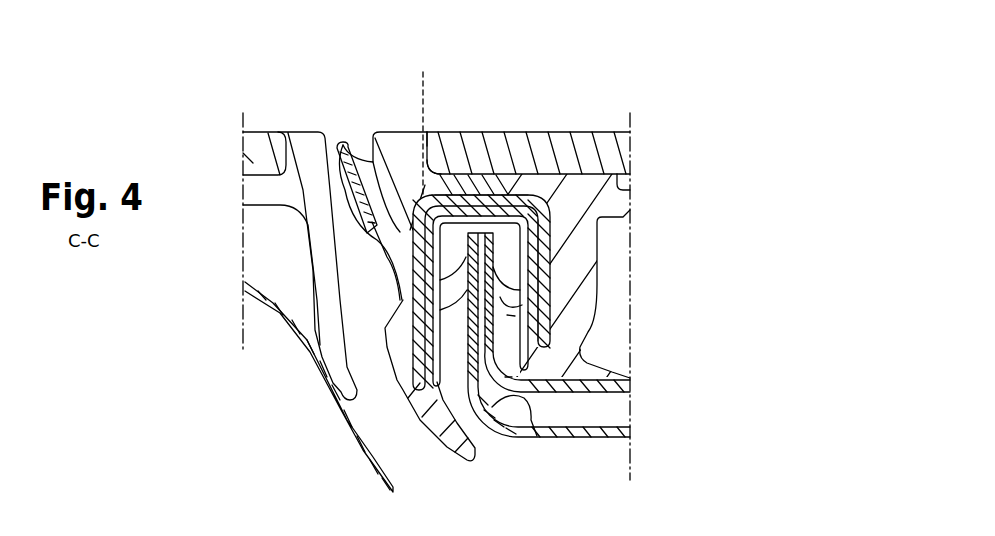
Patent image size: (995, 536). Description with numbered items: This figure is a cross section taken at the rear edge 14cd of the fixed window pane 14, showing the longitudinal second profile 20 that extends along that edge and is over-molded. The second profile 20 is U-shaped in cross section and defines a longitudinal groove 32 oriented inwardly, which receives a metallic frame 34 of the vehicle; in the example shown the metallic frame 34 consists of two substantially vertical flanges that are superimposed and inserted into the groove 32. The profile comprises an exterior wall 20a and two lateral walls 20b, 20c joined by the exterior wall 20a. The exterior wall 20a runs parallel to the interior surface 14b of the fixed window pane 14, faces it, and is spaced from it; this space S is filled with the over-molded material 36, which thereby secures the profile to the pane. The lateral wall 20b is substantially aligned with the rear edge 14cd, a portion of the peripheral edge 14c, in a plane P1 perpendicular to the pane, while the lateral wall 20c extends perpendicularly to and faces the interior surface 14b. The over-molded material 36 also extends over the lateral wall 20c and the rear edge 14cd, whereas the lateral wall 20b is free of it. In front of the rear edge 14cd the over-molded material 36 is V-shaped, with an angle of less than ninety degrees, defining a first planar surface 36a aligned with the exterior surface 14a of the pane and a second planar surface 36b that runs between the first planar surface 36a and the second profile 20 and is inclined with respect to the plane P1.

The fixed window pane 14 is at (551, 115).
The exterior surface 14a is at (488, 132).
The interior surface 14b is at (630, 190).
The peripheral edge 14c is at (382, 166).
The rear edge 14cd is at (434, 167).
The second profile 20 is at (572, 274).
The exterior wall 20a is at (482, 190).
The lateral wall 20b is at (398, 318).
The lateral wall 20c is at (543, 276).
The longitudinal groove 32 is at (507, 315).
The metallic frame 34 is at (533, 418).
The over-molded material 36 is at (376, 132).
The first planar surface 36a is at (393, 145).
The second planar surface 36b is at (343, 143).
The plane P1 is at (423, 72).
The space S is at (436, 196).